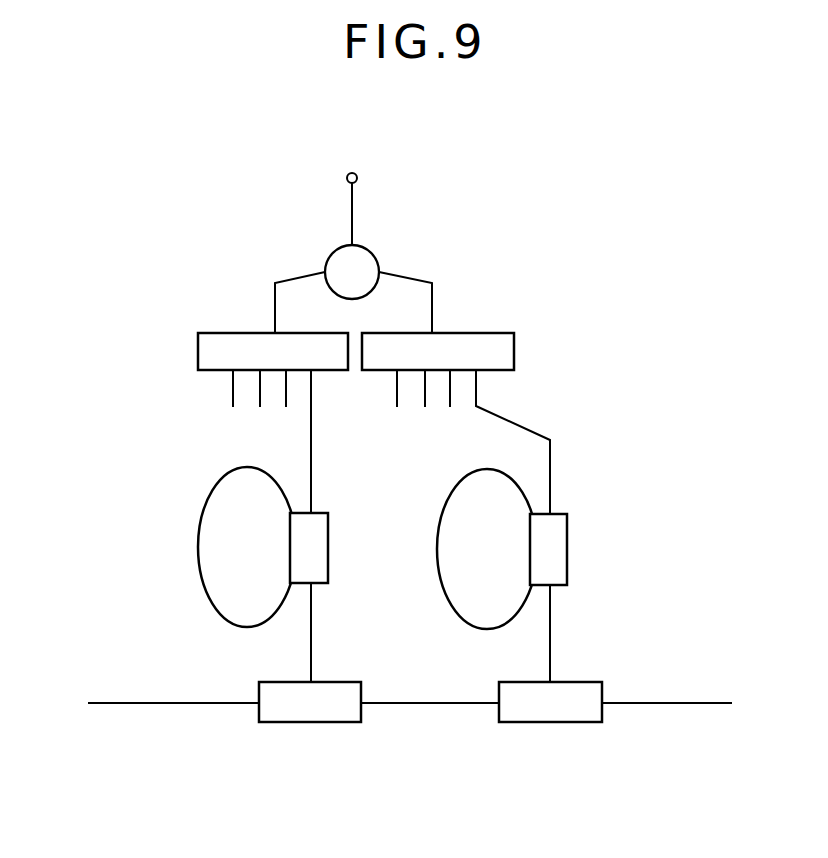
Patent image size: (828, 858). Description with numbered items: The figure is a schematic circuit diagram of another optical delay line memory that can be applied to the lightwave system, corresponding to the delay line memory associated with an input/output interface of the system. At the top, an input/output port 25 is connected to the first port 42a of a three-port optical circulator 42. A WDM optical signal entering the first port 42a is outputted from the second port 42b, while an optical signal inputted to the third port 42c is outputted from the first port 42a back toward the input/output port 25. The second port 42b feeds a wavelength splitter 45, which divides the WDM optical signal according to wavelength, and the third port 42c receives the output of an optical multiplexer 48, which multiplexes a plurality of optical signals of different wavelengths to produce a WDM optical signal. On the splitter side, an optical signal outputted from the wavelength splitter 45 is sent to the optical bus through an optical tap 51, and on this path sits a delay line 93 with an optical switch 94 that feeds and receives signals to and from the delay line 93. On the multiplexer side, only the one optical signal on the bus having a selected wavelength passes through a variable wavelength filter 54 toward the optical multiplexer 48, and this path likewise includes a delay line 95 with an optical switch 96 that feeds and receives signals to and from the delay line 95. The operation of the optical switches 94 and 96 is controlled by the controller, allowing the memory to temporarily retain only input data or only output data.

The input/output port 25 is at (357, 175).
The three-port optical circulator 42 is at (377, 257).
The first port 42a is at (352, 215).
The second port 42b is at (300, 277).
The third port 42c is at (410, 278).
The wavelength splitter 45 is at (198, 350).
The optical multiplexer 48 is at (514, 350).
The optical tap 51 is at (311, 722).
The variable wavelength filter 54 is at (553, 722).
The delay line 93 is at (198, 548).
The optical switch 94 is at (328, 543).
The delay line 95 is at (443, 592).
The optical switch 96 is at (567, 552).